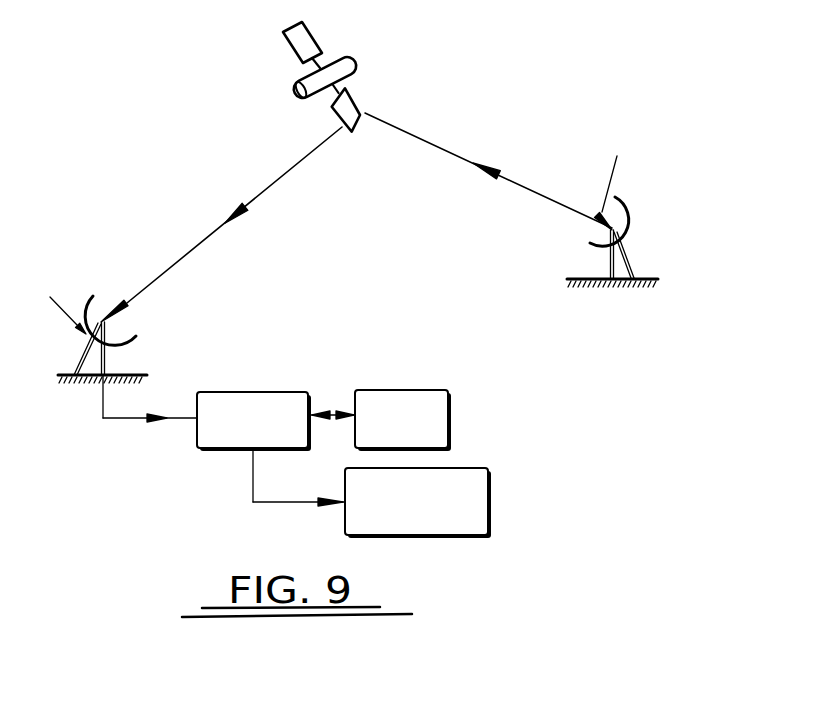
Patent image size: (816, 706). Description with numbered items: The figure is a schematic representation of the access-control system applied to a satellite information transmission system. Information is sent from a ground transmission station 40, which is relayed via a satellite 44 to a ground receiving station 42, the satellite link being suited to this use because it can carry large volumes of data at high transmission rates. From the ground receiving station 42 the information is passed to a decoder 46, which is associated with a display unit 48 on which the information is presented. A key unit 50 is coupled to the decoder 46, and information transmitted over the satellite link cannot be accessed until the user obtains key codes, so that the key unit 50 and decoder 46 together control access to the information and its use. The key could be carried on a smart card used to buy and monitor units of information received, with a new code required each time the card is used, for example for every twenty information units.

The ground transmission station 40 is at (590, 256).
The ground receiving station 42 is at (160, 326).
The satellite 44 is at (370, 85).
The decoder 46 is at (285, 407).
The display unit 48 is at (467, 485).
The key unit 50 is at (430, 407).